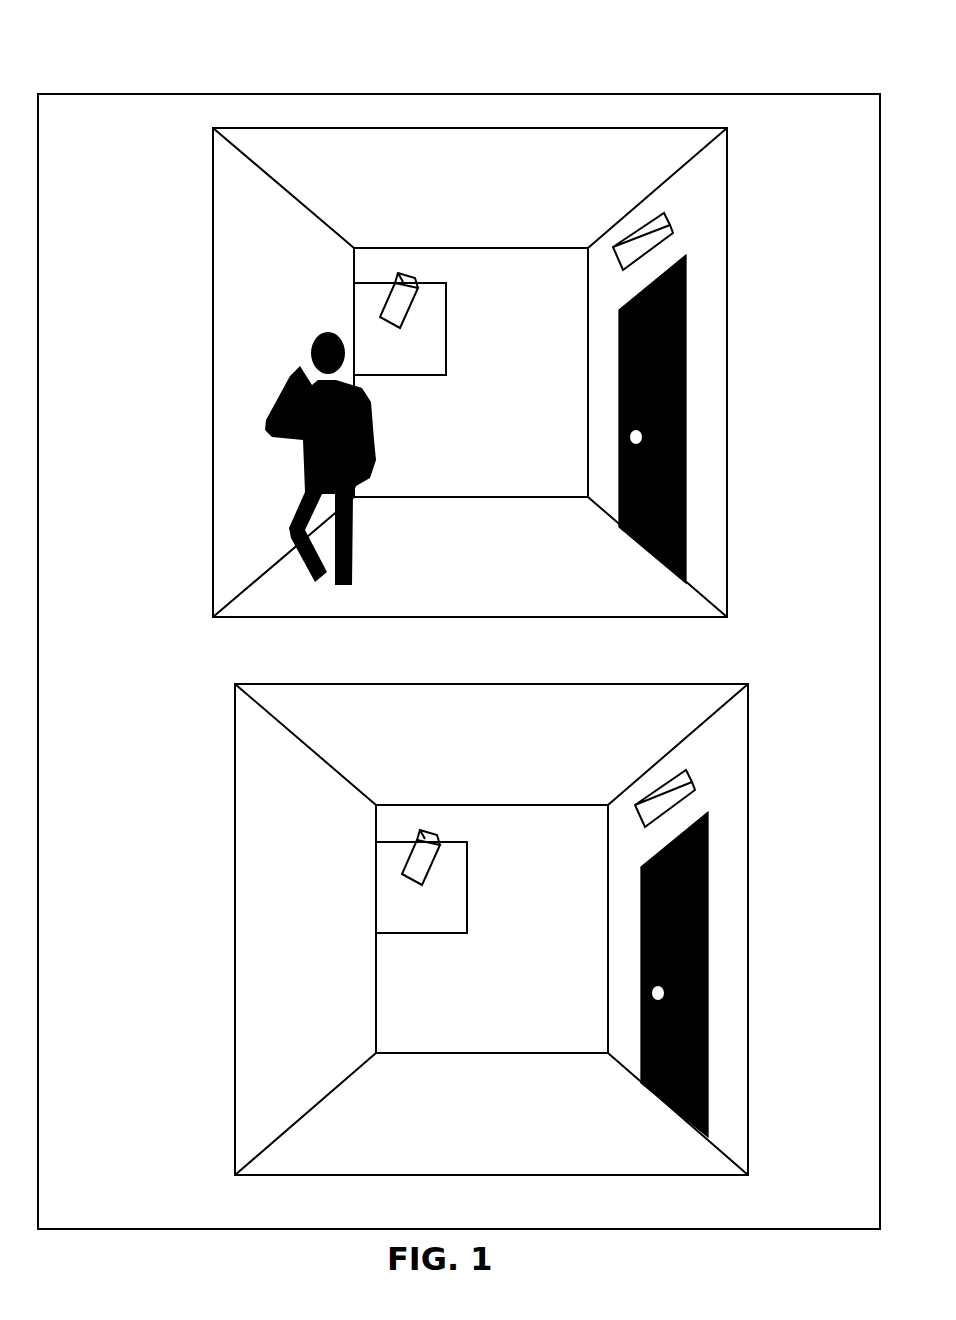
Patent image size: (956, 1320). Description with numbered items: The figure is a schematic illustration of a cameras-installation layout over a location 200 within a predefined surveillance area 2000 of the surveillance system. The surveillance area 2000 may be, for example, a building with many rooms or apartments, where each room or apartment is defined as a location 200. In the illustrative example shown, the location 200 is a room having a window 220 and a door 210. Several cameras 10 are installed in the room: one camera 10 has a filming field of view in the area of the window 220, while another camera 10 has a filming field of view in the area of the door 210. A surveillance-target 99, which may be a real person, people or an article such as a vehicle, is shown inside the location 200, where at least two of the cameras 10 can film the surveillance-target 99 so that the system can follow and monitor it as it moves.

The surveillance area 2000 is at (576, 91).
The location 200 is at (672, 125).
The camera 10 is at (399, 267).
The window 220 is at (440, 307).
The door 210 is at (603, 434).
The surveillance-target 99 is at (289, 364).